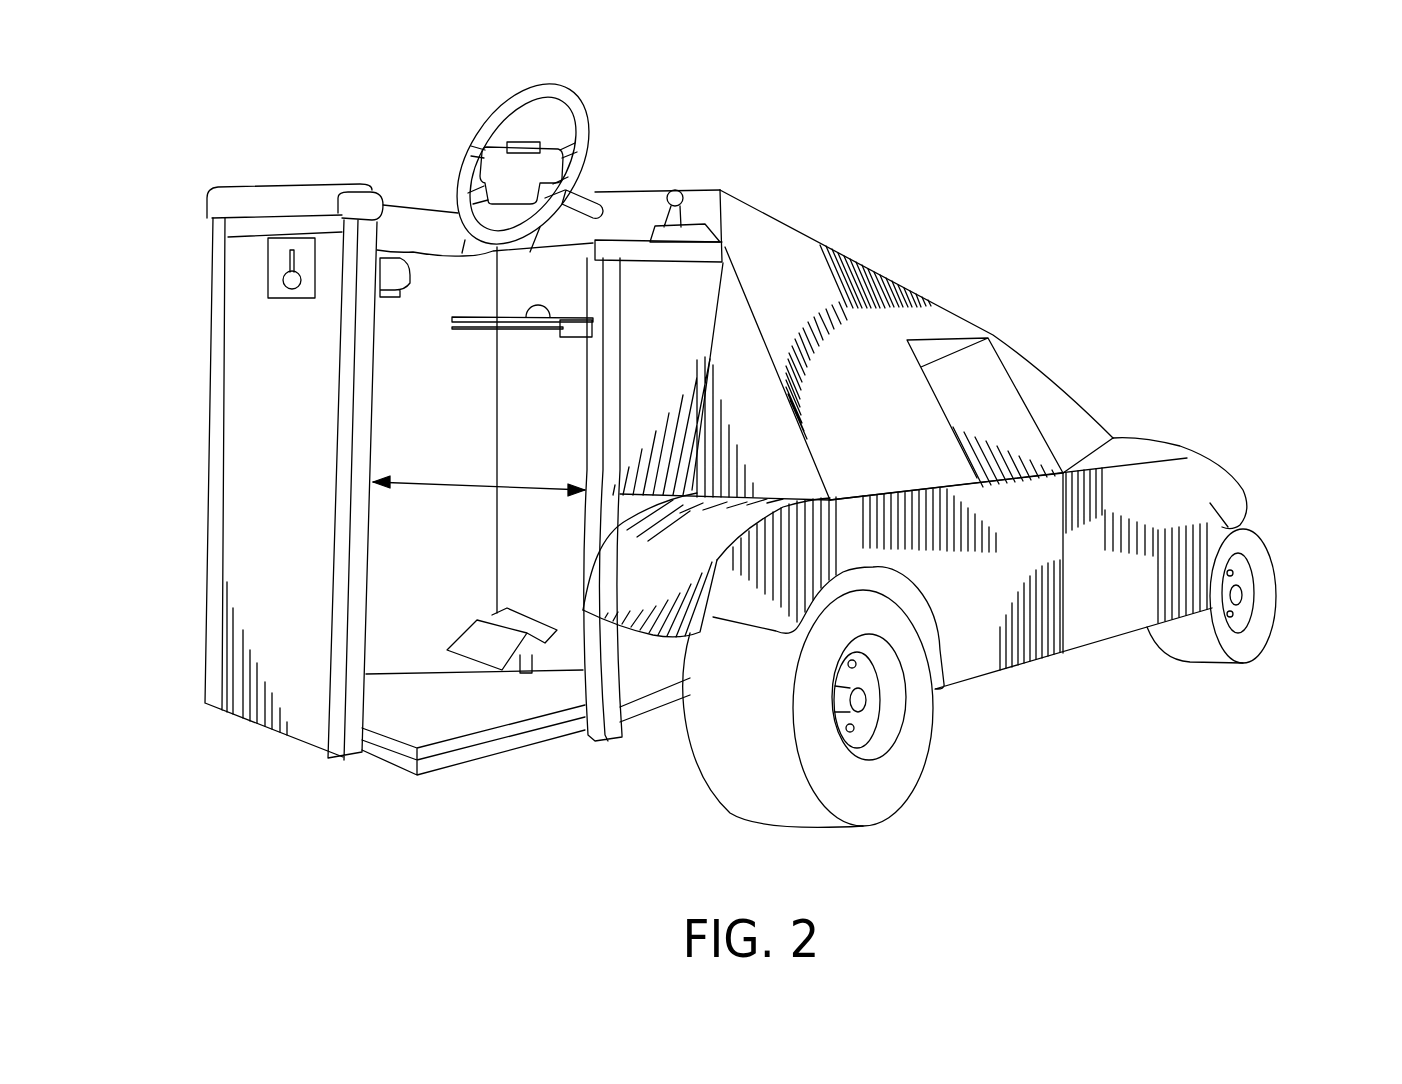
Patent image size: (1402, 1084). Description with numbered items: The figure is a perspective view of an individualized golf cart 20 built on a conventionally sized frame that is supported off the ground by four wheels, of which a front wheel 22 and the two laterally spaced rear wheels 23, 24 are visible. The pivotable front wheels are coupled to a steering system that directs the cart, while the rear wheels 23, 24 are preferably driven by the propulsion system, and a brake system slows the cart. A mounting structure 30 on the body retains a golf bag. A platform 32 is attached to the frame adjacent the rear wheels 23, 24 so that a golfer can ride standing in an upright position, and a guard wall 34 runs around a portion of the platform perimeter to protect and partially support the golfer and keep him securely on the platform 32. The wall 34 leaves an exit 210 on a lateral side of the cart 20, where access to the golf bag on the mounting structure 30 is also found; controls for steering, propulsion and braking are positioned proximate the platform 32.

The golf cart 20 is at (853, 220).
The front wheel 22 is at (1257, 553).
The rear wheel 23 is at (887, 380).
The rear wheel 24 is at (782, 777).
The mounting structure 30 is at (1007, 435).
The platform 32 is at (375, 783).
The guard wall 34 is at (218, 503).
The exit 210 is at (478, 483).